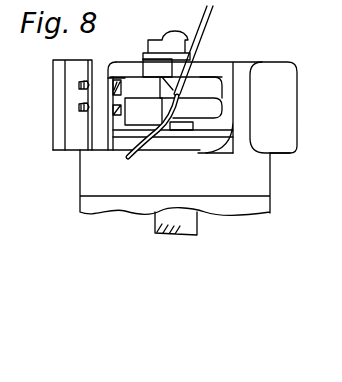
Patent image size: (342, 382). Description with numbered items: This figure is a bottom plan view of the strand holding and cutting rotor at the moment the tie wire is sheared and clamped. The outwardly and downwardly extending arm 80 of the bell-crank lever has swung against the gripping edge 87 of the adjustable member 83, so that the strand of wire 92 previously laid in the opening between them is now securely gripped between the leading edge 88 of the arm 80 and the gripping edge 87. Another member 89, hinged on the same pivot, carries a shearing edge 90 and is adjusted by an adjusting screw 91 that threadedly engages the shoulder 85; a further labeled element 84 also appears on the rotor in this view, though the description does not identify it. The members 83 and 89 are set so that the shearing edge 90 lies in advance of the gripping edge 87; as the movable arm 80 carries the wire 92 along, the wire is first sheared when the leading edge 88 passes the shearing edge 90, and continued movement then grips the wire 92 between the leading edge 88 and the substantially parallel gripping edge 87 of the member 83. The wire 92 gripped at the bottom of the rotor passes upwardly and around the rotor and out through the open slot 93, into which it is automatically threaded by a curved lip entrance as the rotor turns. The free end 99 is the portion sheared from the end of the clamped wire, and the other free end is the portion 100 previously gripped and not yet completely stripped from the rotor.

The arm 80 is at (204, 97).
The member 83 is at (140, 120).
The lower screw 84 is at (83, 109).
The shoulder 85 is at (92, 131).
The gripping edge 87 is at (113, 70).
The leading edge 88 is at (208, 60).
The member 89 is at (136, 73).
The shearing edge 90 is at (143, 74).
The adjusting screw 91 is at (80, 87).
The strand of wire 92 is at (146, 144).
The open slot 93 is at (243, 113).
The free end 99 is at (157, 68).
The portion 100 is at (165, 108).